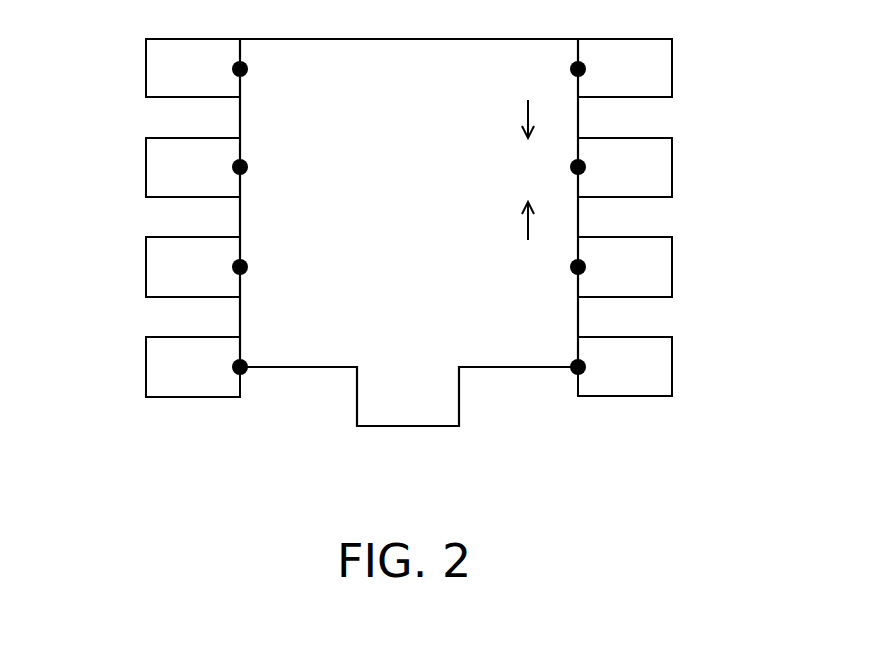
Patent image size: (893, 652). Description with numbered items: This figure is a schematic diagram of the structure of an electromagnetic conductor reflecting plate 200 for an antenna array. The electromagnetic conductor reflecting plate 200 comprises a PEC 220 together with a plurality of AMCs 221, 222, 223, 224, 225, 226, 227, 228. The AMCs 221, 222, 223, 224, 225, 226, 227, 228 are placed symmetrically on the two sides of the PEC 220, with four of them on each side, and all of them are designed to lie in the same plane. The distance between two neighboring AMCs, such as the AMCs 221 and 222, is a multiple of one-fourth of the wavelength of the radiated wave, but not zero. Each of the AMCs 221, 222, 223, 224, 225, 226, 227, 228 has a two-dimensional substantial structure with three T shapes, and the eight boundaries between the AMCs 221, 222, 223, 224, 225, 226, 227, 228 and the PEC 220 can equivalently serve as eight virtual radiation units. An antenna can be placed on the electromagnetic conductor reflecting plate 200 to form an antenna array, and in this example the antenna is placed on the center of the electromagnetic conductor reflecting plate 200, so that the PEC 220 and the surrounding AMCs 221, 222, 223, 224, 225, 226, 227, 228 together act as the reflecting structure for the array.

The electromagnetic conductor reflecting plate 200 is at (711, 473).
The PEC 220 is at (297, 371).
The AMC 221 is at (672, 68).
The AMC 222 is at (672, 167).
The AMC 223 is at (672, 267).
The AMC 224 is at (672, 367).
The AMC 225 is at (146, 67).
The AMC 226 is at (146, 166).
The AMC 227 is at (146, 266).
The AMC 228 is at (146, 366).